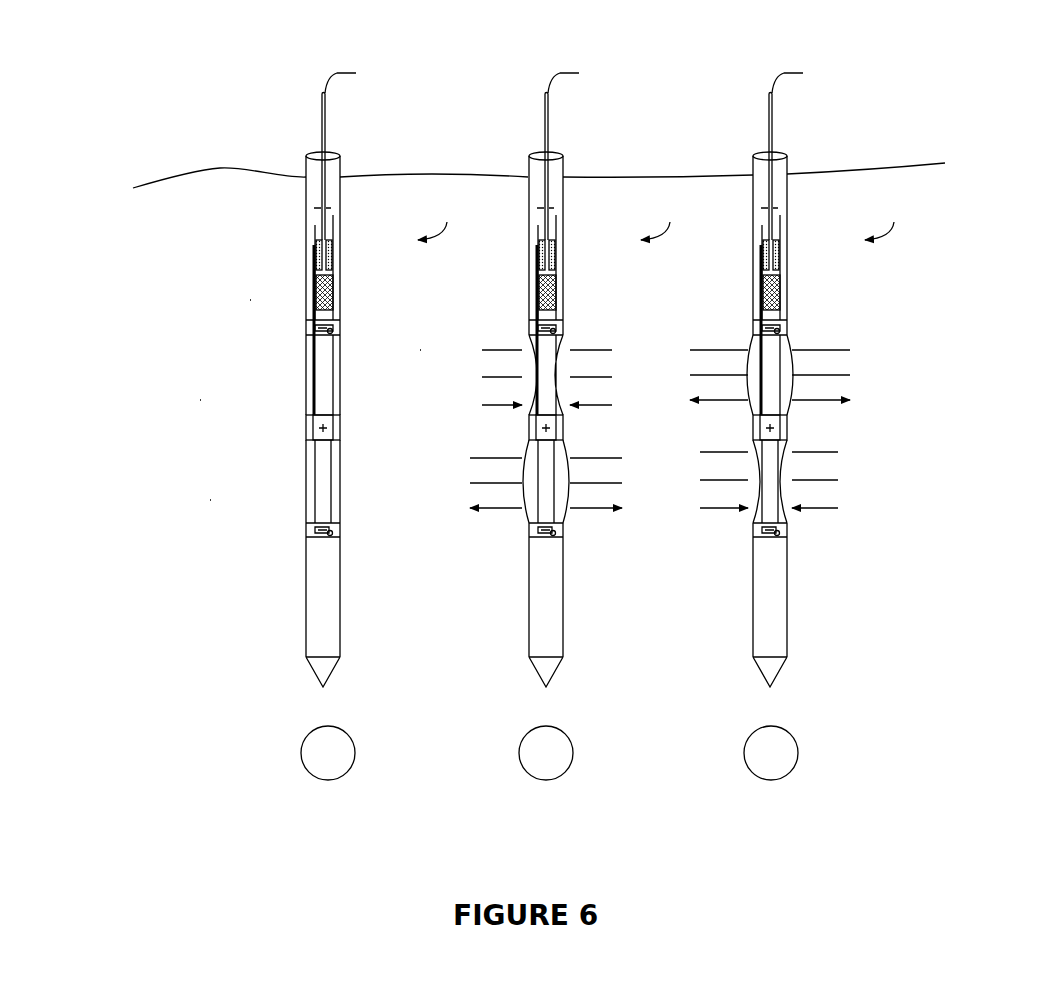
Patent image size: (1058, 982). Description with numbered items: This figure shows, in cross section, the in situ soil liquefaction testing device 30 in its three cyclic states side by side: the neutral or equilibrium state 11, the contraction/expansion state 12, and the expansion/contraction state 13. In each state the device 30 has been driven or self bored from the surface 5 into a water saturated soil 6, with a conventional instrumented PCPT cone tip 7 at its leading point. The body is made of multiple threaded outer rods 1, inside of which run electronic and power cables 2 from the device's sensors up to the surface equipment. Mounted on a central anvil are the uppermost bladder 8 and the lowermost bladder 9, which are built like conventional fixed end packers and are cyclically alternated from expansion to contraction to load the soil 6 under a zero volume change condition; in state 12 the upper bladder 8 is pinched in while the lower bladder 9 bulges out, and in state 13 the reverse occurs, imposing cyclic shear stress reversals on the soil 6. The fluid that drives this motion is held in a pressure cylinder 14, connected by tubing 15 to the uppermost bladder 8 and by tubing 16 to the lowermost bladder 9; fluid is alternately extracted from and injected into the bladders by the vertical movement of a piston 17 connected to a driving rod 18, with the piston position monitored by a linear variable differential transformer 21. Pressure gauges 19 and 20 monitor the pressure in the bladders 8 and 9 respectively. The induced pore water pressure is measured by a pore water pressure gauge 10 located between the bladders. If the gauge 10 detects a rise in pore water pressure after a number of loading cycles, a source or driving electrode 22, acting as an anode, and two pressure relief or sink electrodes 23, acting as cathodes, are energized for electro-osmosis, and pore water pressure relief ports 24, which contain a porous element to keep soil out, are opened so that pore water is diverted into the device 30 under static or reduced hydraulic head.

The threaded outer rods 1 is at (339, 146).
The electronic and power cables 2 is at (339, 67).
The surface 5 is at (243, 103).
The water saturated soil 6 is at (212, 352).
The instrumented PCPT cone tip 7 is at (310, 669).
The uppermost bladder 8 is at (309, 348).
The lowermost bladder 9 is at (306, 458).
The pore water pressure gauge 10 is at (305, 430).
The neutral or equilibrium state 11 is at (328, 753).
The contraction/expansion state 12 is at (546, 753).
The expansion/contraction state 13 is at (771, 753).
The pressure cylinder 14 is at (313, 236).
The tubing 15 is at (341, 320).
The tubing 16 is at (312, 263).
The piston 17 is at (332, 270).
The driving rod 18 is at (320, 110).
The pressure gauge 19 is at (335, 250).
The pressure gauge 20 is at (312, 305).
The linear variable differential transformer 21 is at (332, 212).
The source or driving electrode 22 is at (332, 425).
The pressure relief or sink electrodes 23 is at (338, 330).
The pore water pressure relief ports 24 is at (336, 333).
The device 30 is at (661, 218).